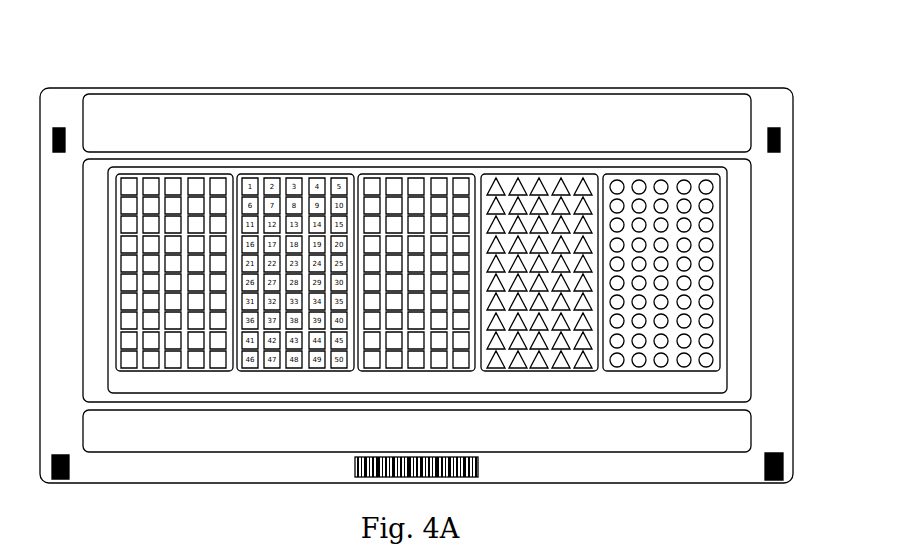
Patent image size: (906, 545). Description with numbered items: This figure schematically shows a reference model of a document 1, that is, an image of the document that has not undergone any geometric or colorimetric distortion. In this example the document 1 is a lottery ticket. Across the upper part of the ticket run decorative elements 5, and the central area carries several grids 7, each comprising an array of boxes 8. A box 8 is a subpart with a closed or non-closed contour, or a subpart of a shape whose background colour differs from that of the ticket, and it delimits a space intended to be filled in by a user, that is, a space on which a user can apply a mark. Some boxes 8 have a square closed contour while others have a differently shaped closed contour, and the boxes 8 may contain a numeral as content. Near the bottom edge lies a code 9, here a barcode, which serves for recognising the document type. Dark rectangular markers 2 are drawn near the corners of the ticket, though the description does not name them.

The document 1 is at (403, 50).
The corner markers 2 is at (58, 140).
The decorative elements 5 is at (302, 108).
The grids 7 is at (183, 183).
The boxes 8 is at (383, 183).
The code 9 is at (478, 466).